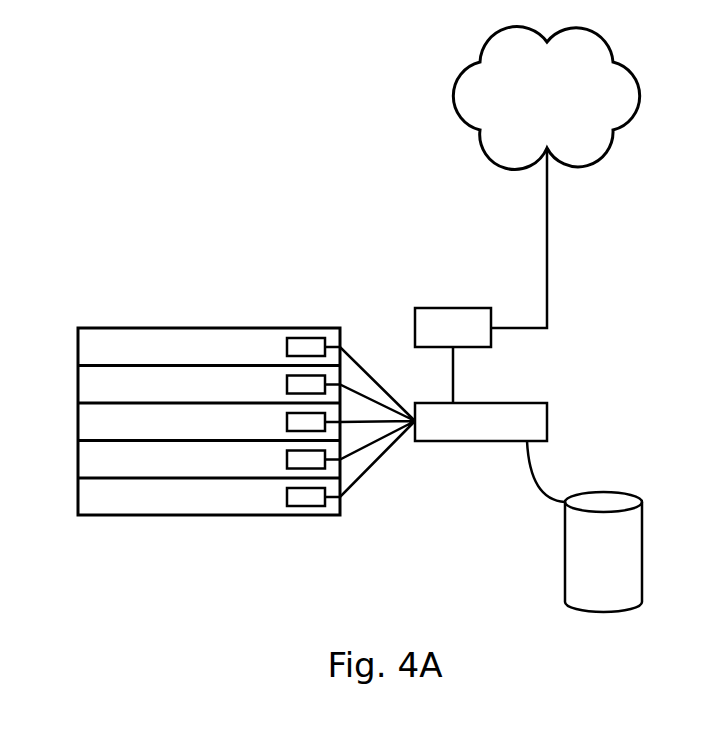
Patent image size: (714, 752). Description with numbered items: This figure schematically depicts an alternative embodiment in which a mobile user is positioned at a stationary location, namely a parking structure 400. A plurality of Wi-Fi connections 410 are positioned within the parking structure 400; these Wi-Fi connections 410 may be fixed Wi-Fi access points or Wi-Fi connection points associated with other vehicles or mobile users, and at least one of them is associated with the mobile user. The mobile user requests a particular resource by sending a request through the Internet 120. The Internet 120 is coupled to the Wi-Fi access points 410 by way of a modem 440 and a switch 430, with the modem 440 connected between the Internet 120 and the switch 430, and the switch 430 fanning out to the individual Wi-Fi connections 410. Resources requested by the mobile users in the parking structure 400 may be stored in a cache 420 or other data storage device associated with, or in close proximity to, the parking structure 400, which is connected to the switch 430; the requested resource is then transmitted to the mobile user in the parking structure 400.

The Internet 120 is at (642, 95).
The parking structure 400 is at (55, 316).
The Wi-Fi connections 410 is at (285, 347).
The cache 420 is at (586, 566).
The switch 430 is at (549, 420).
The modem 440 is at (413, 328).